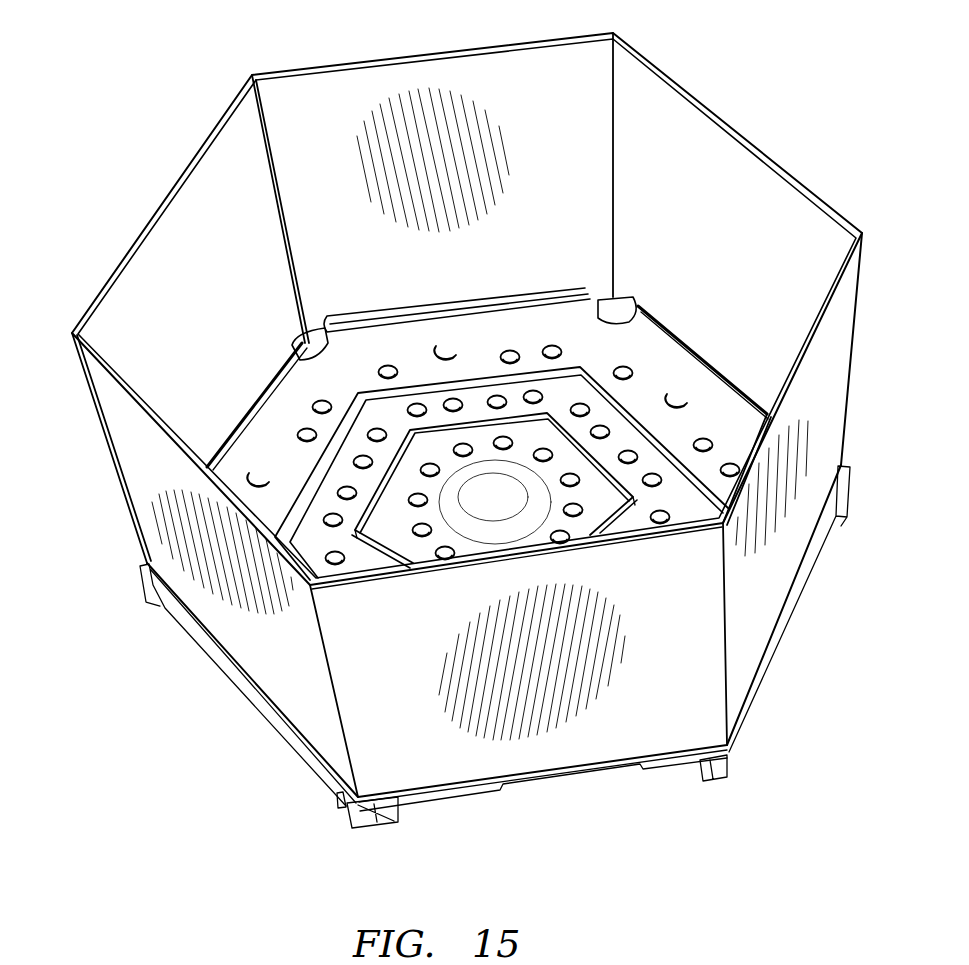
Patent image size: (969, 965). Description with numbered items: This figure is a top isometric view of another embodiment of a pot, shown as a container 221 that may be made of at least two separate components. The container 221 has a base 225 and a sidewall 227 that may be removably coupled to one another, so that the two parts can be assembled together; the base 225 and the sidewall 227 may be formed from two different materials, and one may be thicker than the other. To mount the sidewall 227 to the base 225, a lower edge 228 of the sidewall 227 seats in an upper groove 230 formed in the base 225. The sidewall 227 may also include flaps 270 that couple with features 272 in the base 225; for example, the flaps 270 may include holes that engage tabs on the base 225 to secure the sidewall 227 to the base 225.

The container 221 is at (124, 130).
The sidewall 227 is at (125, 253).
The base 225 is at (320, 382).
The upper groove 230 is at (594, 298).
The lower edge 228 is at (630, 304).
The flaps 270 is at (263, 463).
The features 272 is at (252, 473).